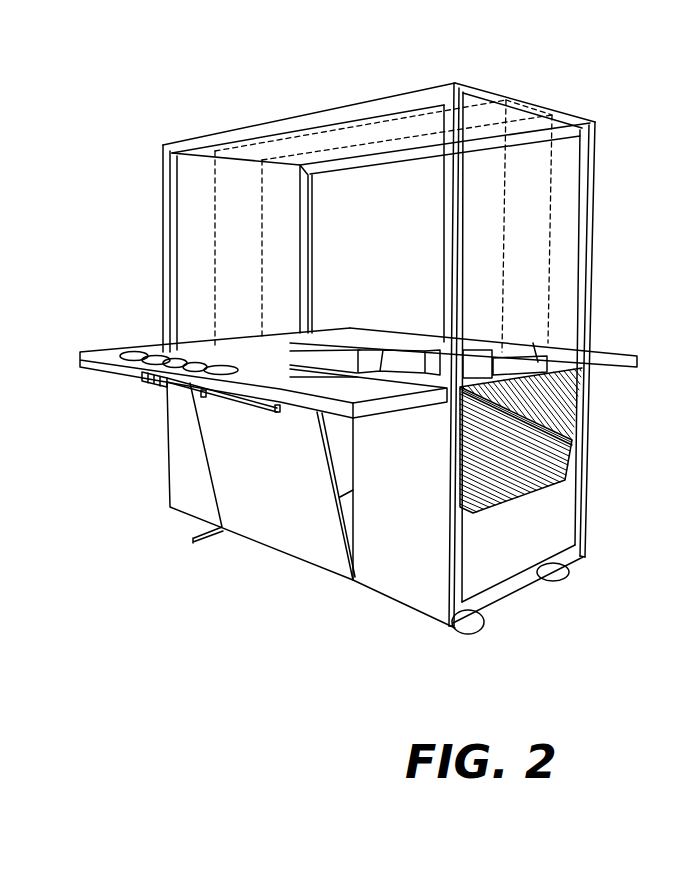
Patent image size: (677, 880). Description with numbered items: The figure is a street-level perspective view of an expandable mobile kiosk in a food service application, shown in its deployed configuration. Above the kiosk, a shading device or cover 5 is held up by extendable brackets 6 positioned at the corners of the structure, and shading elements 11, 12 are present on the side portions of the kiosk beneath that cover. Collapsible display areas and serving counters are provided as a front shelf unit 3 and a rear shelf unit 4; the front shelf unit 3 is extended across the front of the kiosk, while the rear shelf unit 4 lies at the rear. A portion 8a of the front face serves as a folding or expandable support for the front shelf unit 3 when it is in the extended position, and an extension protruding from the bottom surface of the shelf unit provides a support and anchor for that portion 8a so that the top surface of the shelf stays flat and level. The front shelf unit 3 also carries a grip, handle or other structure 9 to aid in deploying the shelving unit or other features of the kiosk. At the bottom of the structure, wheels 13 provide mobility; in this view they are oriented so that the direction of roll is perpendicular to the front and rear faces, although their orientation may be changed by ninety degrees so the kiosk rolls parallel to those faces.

The front shelf unit 3 is at (110, 350).
The rear shelf unit 4 is at (593, 472).
The cover 5 is at (318, 150).
The extendable brackets 6 is at (168, 176).
The portion of the front face 8a is at (288, 525).
The grip, handle or other structure 9 is at (157, 388).
The side shading element 11 is at (228, 187).
The side shading element 12 is at (523, 218).
The wheels 13 is at (547, 592).